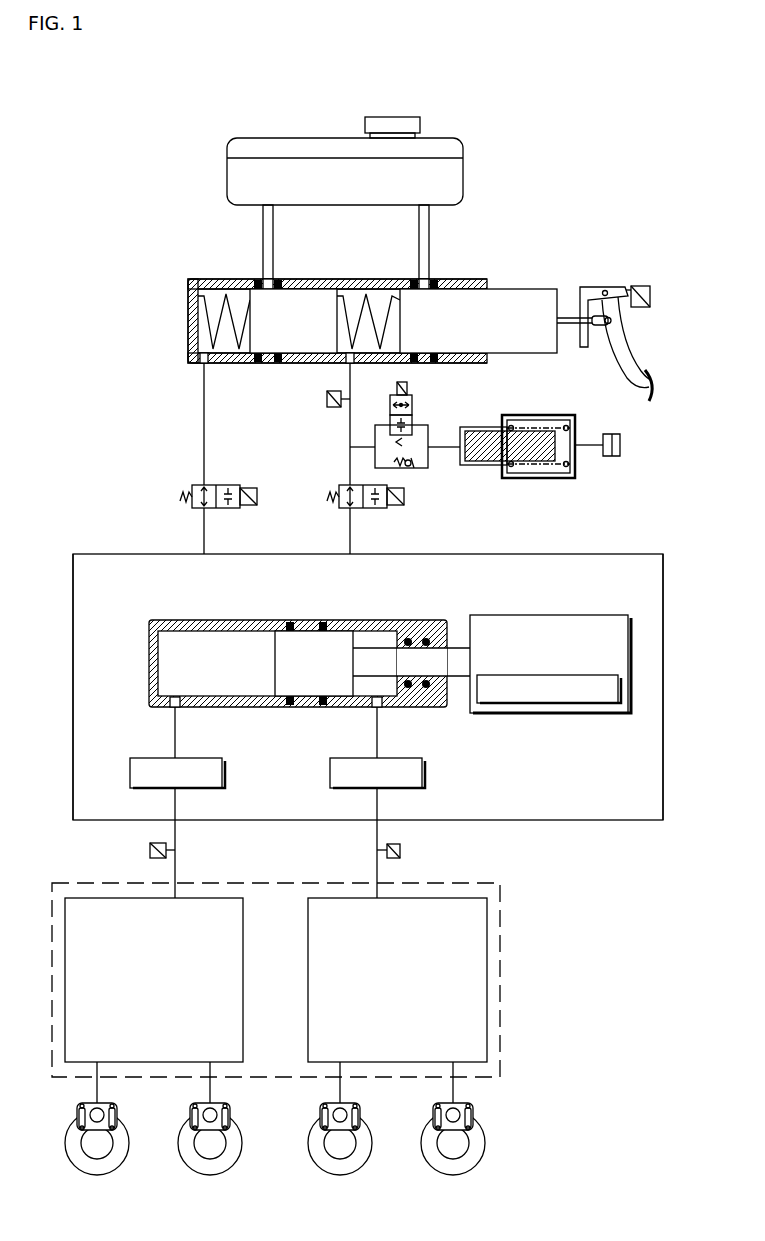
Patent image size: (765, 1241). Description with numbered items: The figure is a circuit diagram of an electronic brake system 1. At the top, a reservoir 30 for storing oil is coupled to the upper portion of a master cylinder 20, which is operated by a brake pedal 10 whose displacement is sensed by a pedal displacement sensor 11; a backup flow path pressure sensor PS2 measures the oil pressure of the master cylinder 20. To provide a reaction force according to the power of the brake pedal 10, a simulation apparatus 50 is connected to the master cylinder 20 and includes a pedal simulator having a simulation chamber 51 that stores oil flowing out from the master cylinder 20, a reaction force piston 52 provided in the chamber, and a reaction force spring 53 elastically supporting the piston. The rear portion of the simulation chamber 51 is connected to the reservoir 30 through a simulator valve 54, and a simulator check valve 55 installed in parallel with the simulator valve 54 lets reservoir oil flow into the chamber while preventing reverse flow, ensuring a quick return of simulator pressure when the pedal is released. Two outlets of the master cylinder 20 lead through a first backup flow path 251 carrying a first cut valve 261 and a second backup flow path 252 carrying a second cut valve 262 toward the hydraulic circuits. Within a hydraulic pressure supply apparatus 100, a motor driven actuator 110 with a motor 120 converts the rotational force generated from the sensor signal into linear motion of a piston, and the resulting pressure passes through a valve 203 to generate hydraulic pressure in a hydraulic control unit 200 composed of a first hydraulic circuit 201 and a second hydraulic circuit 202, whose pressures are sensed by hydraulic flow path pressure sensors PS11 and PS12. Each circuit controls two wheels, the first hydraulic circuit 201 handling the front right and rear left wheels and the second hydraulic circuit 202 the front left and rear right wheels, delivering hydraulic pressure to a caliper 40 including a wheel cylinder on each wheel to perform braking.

The electronic brake system 1 is at (210, 89).
The reservoir 30 is at (262, 138).
The master cylinder 20 is at (188, 295).
The brake pedal 10 is at (620, 340).
The pedal displacement sensor 11 is at (650, 290).
The backup flow path pressure sensor PS2 is at (327, 400).
The simulator valve 54 is at (412, 400).
The simulator check valve 55 is at (410, 470).
The simulation apparatus 50 is at (520, 420).
The simulation chamber 51 is at (537, 415).
The reaction force piston 52 is at (485, 427).
The reaction force spring 53 is at (511, 420).
The second cut valve 262 is at (192, 489).
The first cut valve 261 is at (339, 488).
The hydraulic pressure supply apparatus 100 is at (391, 687).
The motor driven actuator 110 is at (590, 650).
The motor 120 is at (621, 688).
The second backup flow path 252 is at (73, 688).
The first backup flow path 251 is at (663, 771).
The valve 203 is at (198, 758).
The hydraulic control unit 200 is at (276, 962).
The second hydraulic circuit 202 is at (243, 950).
The first hydraulic circuit 201 is at (308, 1001).
The hydraulic flow path pressure sensor PS12 is at (150, 850).
The hydraulic flow path pressure sensor PS11 is at (400, 850).
The caliper 40 is at (119, 1113).